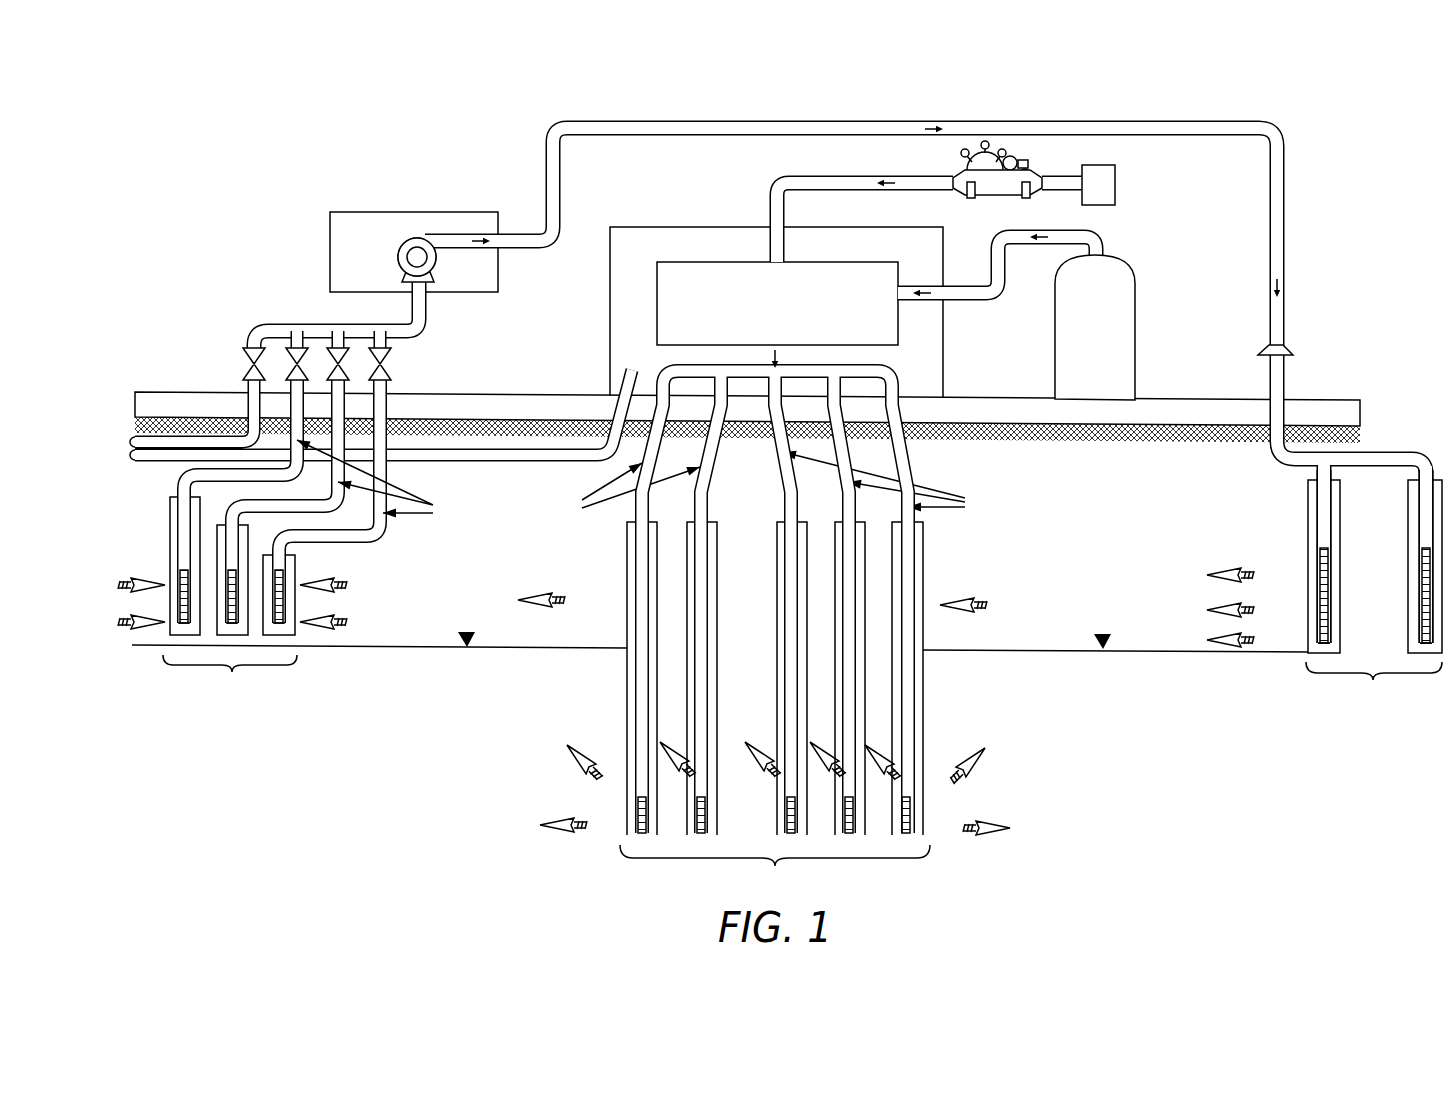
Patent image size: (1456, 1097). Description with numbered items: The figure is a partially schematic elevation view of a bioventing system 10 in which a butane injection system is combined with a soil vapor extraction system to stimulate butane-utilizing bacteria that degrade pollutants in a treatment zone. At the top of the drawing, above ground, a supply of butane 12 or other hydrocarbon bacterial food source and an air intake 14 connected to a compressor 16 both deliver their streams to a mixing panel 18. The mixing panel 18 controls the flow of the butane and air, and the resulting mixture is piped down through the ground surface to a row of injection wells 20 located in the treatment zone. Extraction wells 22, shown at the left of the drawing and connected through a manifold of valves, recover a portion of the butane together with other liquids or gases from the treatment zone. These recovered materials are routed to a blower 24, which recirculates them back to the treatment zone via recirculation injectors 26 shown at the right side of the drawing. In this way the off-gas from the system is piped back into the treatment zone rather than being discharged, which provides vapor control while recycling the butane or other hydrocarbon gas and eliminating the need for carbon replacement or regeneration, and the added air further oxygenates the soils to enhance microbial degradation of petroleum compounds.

The bioventing system 10 is at (780, 495).
The supply of butane 12 is at (1123, 327).
The air intake 14 is at (1108, 190).
The compressor 16 is at (988, 197).
The mixing panel 18 is at (885, 318).
The injection wells 20 is at (764, 637).
The extraction wells 22 is at (249, 545).
The blower 24 is at (432, 262).
The recirculation injectors 26 is at (1324, 593).